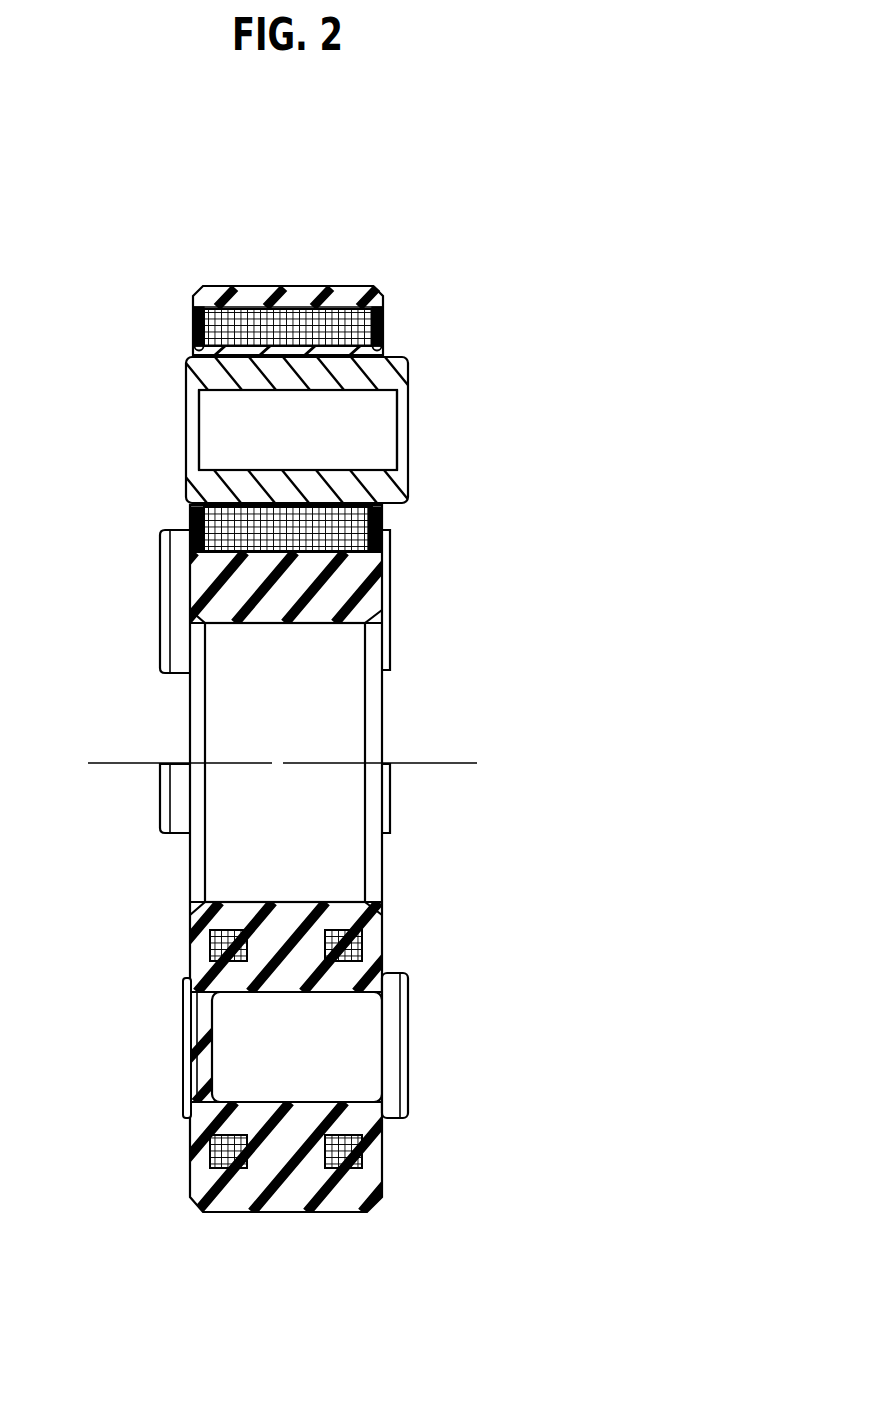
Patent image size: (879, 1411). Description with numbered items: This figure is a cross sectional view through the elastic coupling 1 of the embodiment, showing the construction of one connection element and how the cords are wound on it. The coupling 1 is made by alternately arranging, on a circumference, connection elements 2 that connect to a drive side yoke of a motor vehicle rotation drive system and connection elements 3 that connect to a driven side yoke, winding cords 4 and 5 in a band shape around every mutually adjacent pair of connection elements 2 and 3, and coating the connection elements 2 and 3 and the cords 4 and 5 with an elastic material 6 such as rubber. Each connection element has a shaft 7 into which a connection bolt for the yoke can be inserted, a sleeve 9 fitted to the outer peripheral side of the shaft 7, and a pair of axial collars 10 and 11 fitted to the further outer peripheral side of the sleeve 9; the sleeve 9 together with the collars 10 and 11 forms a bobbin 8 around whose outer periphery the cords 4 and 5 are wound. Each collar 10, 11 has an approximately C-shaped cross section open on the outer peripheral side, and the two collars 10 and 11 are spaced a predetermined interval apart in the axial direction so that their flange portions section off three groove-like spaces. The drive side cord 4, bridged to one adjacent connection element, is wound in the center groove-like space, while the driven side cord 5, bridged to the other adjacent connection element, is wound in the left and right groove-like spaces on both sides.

The elastic coupling 1 is at (450, 557).
The connection element 2 is at (392, 377).
The connection element 3 is at (180, 597).
The drive side cord 4 is at (293, 307).
The driven side cord 5 is at (227, 290).
The elastic material 6 is at (283, 1190).
The shaft 7 is at (210, 377).
The bobbin 8 is at (192, 357).
The sleeve 9 is at (385, 350).
The axial collar 10 is at (193, 323).
The axial collar 11 is at (380, 320).